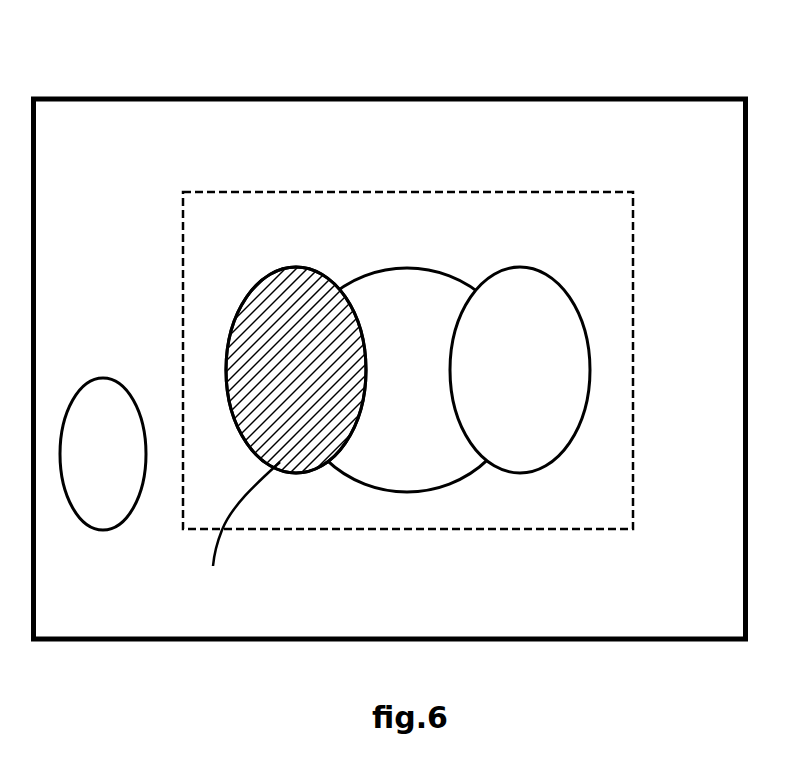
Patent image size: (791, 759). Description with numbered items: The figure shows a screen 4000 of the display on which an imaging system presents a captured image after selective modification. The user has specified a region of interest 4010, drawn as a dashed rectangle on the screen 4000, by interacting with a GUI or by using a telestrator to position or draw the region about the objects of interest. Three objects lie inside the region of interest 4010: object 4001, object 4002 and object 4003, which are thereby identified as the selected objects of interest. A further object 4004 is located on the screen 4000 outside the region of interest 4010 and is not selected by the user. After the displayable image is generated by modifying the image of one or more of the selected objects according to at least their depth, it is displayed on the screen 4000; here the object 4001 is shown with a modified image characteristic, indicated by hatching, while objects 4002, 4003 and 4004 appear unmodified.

The screen 4000 is at (545, 80).
The region of interest 4010 is at (268, 175).
The object 4001 is at (288, 267).
The object 4002 is at (408, 267).
The object 4003 is at (520, 267).
The object 4004 is at (101, 378).